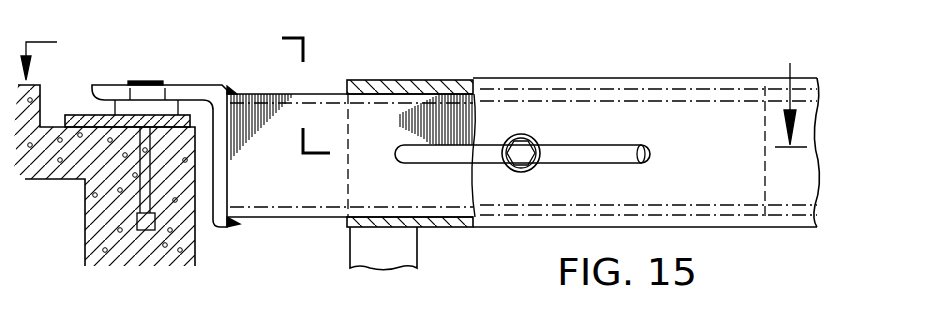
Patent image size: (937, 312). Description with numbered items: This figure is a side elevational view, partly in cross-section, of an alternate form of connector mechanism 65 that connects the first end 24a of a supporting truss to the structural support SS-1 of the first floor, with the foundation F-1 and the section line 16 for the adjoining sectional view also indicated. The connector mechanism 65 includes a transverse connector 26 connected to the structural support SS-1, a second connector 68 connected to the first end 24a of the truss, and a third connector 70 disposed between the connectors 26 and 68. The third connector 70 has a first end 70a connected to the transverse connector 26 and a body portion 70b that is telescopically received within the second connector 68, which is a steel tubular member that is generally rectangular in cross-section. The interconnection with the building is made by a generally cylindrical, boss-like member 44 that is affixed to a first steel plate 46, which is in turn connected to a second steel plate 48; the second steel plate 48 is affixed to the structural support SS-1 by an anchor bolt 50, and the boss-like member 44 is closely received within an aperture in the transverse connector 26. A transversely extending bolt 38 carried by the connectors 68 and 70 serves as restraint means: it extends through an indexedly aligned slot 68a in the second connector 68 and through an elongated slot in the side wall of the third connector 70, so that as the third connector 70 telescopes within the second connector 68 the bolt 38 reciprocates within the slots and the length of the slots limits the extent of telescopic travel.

The section line 16- 16 is at (414, 77).
The foundation F-1 is at (33, 84).
The structural support SS-1 is at (105, 223).
The transverse connector 26 is at (192, 85).
The boss-like member 44 is at (136, 80).
The second steel plate 48 is at (118, 112).
The first steel plate 46 is at (155, 108).
The anchor bolt 50 is at (148, 232).
The third connector 70 is at (293, 92).
The first end 70a is at (242, 188).
The body portion 70b is at (445, 180).
The connector mechanism 65 is at (408, 67).
The first end of supporting truss 24a is at (385, 250).
The second connector 68 is at (600, 75).
The slot 68a is at (641, 146).
The bolt 38 is at (519, 130).